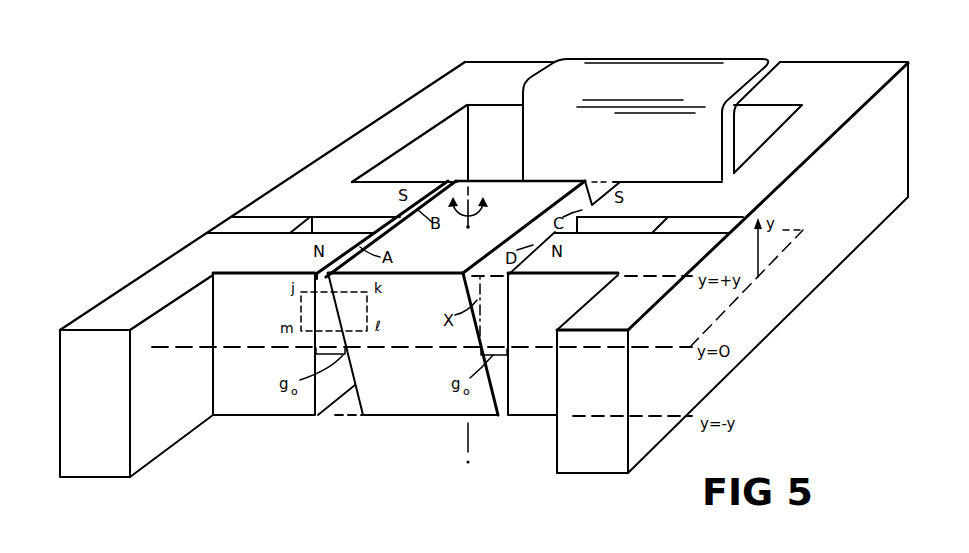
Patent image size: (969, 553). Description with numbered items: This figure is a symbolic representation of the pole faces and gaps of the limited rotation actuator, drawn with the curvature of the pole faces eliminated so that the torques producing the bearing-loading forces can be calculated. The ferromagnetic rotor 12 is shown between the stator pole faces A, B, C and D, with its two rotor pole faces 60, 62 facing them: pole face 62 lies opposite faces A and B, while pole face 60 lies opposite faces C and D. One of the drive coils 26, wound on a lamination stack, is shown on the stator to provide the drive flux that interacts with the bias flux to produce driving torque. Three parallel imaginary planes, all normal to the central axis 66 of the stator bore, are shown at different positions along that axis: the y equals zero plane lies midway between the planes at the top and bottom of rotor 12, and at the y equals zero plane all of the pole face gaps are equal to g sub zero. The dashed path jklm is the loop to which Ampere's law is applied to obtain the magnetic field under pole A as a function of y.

The rotor 12 is at (416, 407).
The drive coil 26 is at (647, 93).
The rotor pole face 60 is at (540, 228).
The rotor pole face 62 is at (387, 226).
The central axis of the stator bore 66 is at (476, 191).